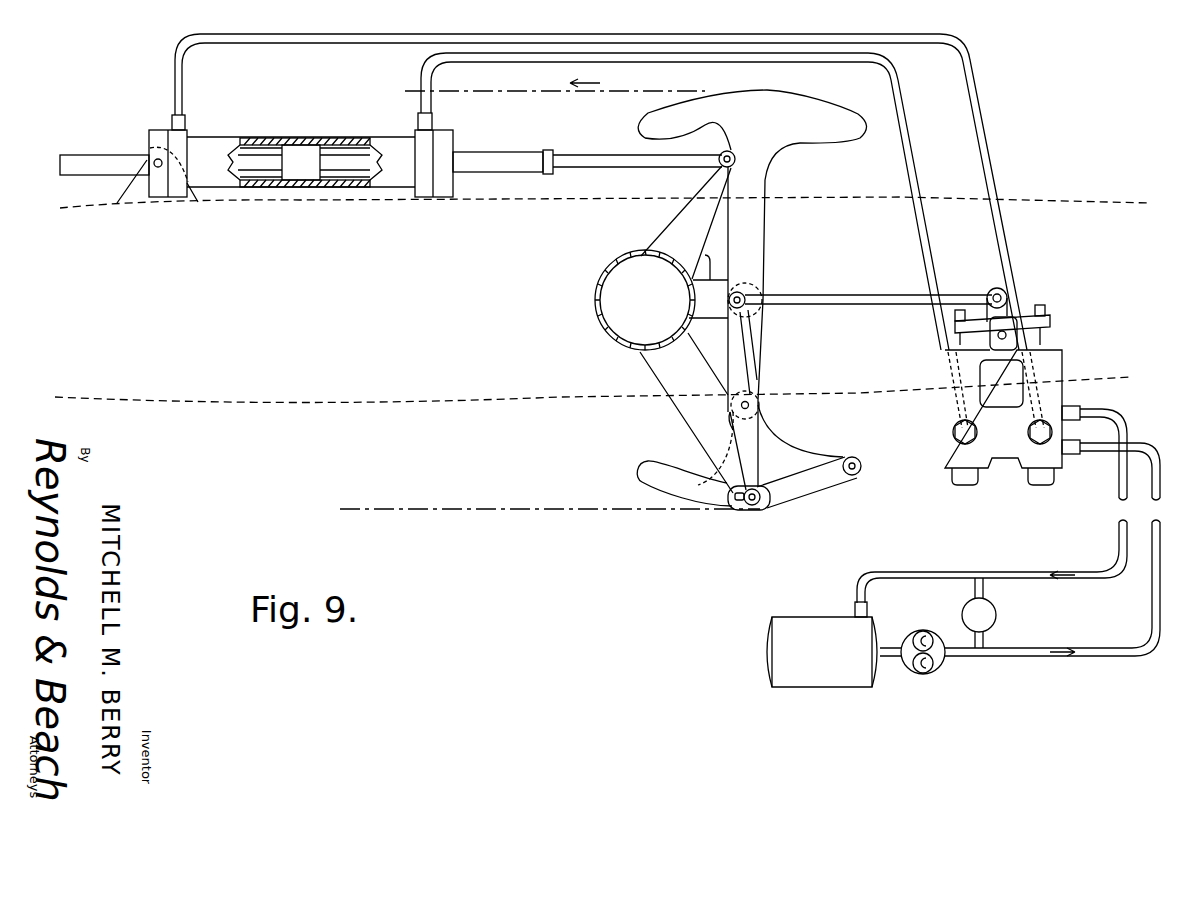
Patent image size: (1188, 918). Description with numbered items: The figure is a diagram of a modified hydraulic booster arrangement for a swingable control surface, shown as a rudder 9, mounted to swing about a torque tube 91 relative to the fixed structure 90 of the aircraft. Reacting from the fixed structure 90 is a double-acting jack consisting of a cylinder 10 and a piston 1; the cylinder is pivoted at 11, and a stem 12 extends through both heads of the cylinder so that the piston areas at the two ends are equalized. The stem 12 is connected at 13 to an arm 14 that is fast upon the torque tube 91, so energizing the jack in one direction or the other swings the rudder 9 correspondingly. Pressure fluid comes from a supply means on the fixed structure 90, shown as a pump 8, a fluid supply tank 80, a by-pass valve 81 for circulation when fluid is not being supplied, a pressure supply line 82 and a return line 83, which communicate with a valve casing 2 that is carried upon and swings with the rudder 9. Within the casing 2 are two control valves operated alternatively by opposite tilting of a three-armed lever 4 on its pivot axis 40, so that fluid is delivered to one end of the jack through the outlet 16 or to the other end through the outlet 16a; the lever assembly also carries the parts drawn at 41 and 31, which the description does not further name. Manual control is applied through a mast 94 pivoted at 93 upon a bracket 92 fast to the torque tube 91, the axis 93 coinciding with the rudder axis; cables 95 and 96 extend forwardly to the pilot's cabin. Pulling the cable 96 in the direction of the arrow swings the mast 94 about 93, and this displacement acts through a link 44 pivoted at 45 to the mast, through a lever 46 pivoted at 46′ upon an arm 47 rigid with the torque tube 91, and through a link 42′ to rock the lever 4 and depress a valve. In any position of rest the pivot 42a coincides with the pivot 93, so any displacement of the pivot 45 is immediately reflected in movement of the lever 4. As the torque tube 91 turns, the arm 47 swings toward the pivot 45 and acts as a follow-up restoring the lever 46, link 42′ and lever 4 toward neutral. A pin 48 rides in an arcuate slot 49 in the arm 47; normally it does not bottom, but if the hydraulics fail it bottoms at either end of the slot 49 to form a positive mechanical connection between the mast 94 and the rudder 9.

The piston 1 is at (293, 150).
The valve casing 2 is at (945, 413).
The three-armed lever 4 is at (1028, 305).
The pump 8 is at (922, 672).
The rudder 9 is at (1023, 195).
The cylinder 10 is at (205, 142).
The cylinder pivot 11 is at (155, 160).
The stem 12 is at (487, 160).
The connection 13 is at (715, 162).
The arm 14 is at (700, 217).
The outlet 16 is at (821, 62).
The outlet 16a is at (963, 65).
The adjusting nut 31 is at (1047, 337).
The pivot axis 40 is at (1010, 332).
The rod pivot 41 is at (1005, 292).
The link 42′ is at (873, 304).
The pivot 42a is at (745, 293).
The link 44 is at (829, 478).
The pivot 45 is at (862, 466).
The lever 46 is at (750, 437).
The pivot 46′ is at (757, 405).
The arm 47 is at (688, 420).
The pivot pin 48 is at (752, 508).
The arcuate slot 49 is at (738, 503).
The fluid supply tank 80 is at (834, 644).
The by-pass valve 81 is at (996, 615).
The pressure supply line 82 is at (1038, 656).
The return line 83 is at (1021, 572).
The fixed structure 90 is at (357, 404).
The torque tube 91 is at (600, 278).
The bracket 92 is at (690, 250).
The hinge axis 93 is at (752, 292).
The mast 94 is at (788, 150).
The cable 95 is at (577, 512).
The cable 96 is at (556, 91).